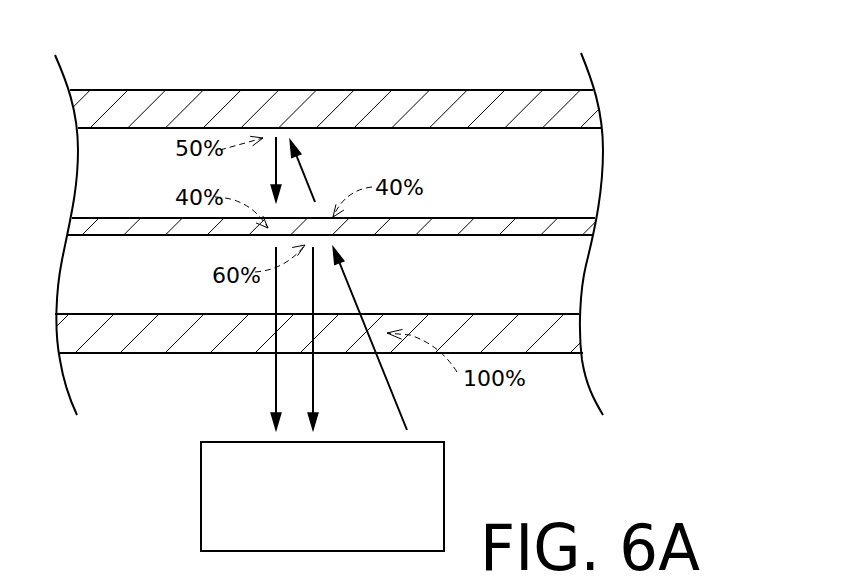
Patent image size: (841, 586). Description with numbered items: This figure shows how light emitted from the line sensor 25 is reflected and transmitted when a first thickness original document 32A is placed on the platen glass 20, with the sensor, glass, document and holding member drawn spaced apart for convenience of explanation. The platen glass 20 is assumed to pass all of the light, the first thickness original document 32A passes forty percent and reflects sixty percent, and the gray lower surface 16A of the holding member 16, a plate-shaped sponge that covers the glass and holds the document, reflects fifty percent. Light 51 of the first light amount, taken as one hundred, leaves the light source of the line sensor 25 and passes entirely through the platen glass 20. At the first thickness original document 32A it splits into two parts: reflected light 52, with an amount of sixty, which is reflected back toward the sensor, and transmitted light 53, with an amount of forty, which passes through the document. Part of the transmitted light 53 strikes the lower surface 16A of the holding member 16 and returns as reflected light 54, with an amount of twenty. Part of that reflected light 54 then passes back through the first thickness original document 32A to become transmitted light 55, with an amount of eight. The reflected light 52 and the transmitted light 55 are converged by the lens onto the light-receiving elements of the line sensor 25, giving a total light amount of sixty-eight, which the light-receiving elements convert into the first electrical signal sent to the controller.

The holding member 16 is at (588, 108).
The lower surface 16A is at (553, 128).
The first thickness original document 32A is at (583, 226).
The platen glass 20 is at (572, 334).
The line sensor 25 is at (423, 495).
The light 51 is at (350, 285).
The reflected light 52 is at (313, 383).
The transmitted light 53 is at (305, 167).
The reflected light 54 is at (276, 172).
The transmitted light 55 is at (276, 383).